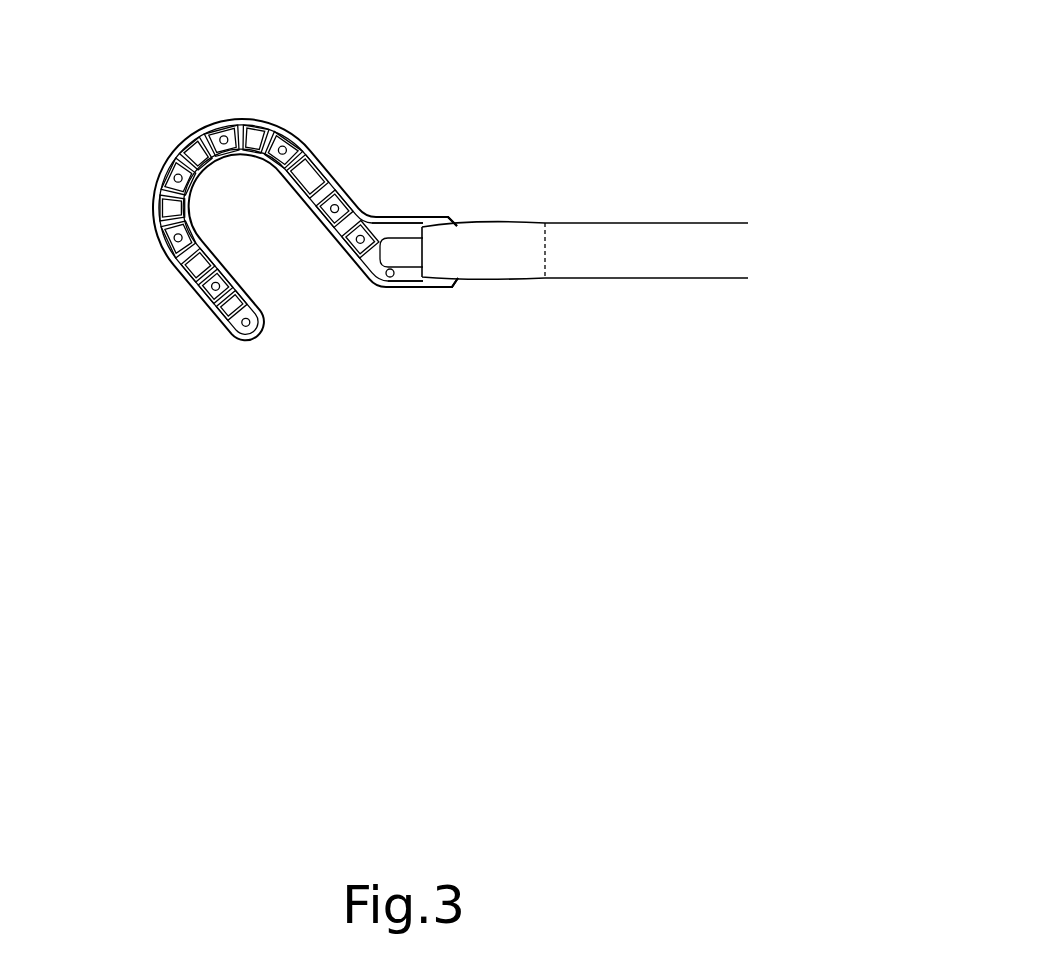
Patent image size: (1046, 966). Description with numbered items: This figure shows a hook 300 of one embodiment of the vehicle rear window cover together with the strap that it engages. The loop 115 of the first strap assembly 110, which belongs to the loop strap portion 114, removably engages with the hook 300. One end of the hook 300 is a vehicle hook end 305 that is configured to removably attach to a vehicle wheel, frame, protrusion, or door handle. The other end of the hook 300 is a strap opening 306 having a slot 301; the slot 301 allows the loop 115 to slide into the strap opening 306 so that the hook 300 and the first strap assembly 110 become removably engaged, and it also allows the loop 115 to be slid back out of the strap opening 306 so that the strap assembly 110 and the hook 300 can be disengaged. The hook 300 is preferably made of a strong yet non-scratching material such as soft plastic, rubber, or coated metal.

The hook 300 is at (450, 166).
The slot 301 is at (375, 183).
The vehicle hook end 305 is at (152, 108).
The strap opening 306 is at (388, 264).
The loop strap portion 114 is at (533, 223).
The loop 115 is at (443, 315).
The first strap assembly 110 is at (580, 349).